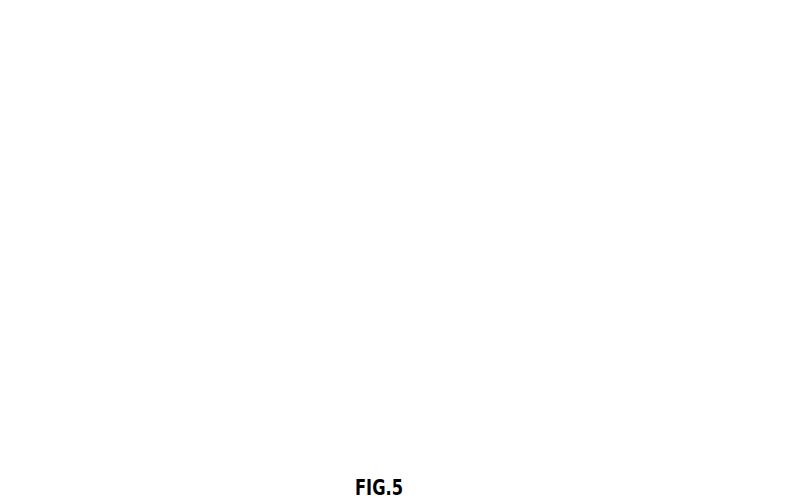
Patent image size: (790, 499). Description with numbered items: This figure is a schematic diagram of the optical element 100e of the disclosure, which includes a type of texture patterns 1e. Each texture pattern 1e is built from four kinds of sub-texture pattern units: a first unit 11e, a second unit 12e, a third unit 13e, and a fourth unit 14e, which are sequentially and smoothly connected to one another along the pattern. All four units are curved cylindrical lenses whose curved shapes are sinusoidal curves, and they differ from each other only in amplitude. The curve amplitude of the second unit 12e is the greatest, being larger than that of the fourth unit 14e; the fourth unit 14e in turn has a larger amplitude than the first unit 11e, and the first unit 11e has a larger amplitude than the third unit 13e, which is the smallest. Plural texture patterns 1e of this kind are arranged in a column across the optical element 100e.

The optical element 100e is at (396, 36).
The texture patterns 1e is at (143, 175).
The first unit 11e is at (194, 165).
The second unit 12e is at (338, 137).
The third unit 13e is at (479, 180).
The fourth unit 14e is at (617, 153).